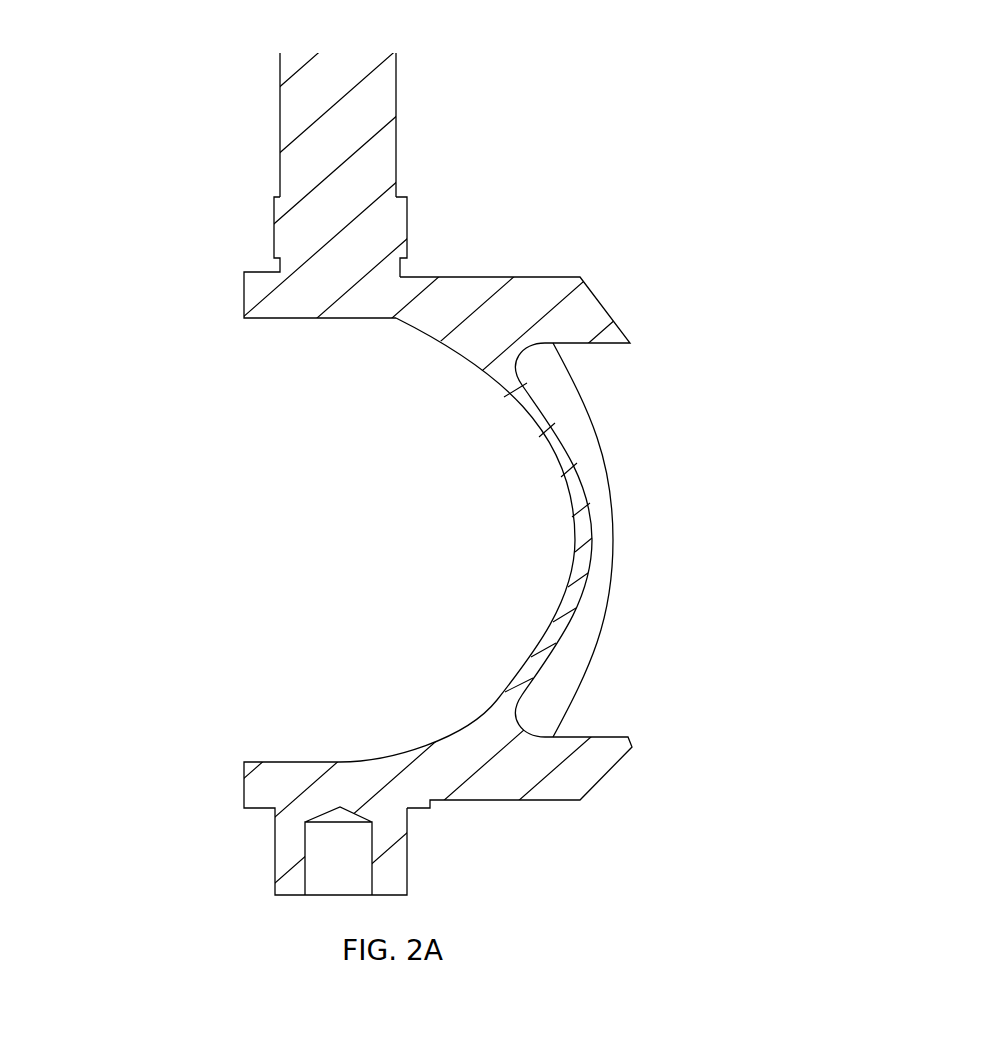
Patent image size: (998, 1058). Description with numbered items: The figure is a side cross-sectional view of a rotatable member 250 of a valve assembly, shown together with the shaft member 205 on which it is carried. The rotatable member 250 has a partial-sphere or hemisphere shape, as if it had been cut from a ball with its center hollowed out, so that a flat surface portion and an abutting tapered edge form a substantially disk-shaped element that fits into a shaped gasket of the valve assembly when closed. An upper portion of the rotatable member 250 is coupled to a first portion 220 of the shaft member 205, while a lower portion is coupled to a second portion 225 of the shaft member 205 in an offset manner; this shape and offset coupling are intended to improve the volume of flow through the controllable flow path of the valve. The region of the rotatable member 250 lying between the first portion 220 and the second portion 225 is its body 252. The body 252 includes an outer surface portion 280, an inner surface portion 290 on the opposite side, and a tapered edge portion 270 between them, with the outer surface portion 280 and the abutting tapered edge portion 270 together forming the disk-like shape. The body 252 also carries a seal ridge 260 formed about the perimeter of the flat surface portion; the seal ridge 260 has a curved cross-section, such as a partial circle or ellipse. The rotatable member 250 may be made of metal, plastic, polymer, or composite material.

The shaft member 205 is at (250, 84).
The first portion of the shaft member 220 is at (250, 229).
The second portion of the shaft member 225 is at (435, 876).
The rotatable member 250 is at (784, 112).
The body 252 is at (745, 411).
The seal ridge 260 is at (654, 775).
The tapered edge portion 270 is at (640, 303).
The outer surface portion 280 is at (637, 514).
The inner surface portion 290 is at (536, 497).